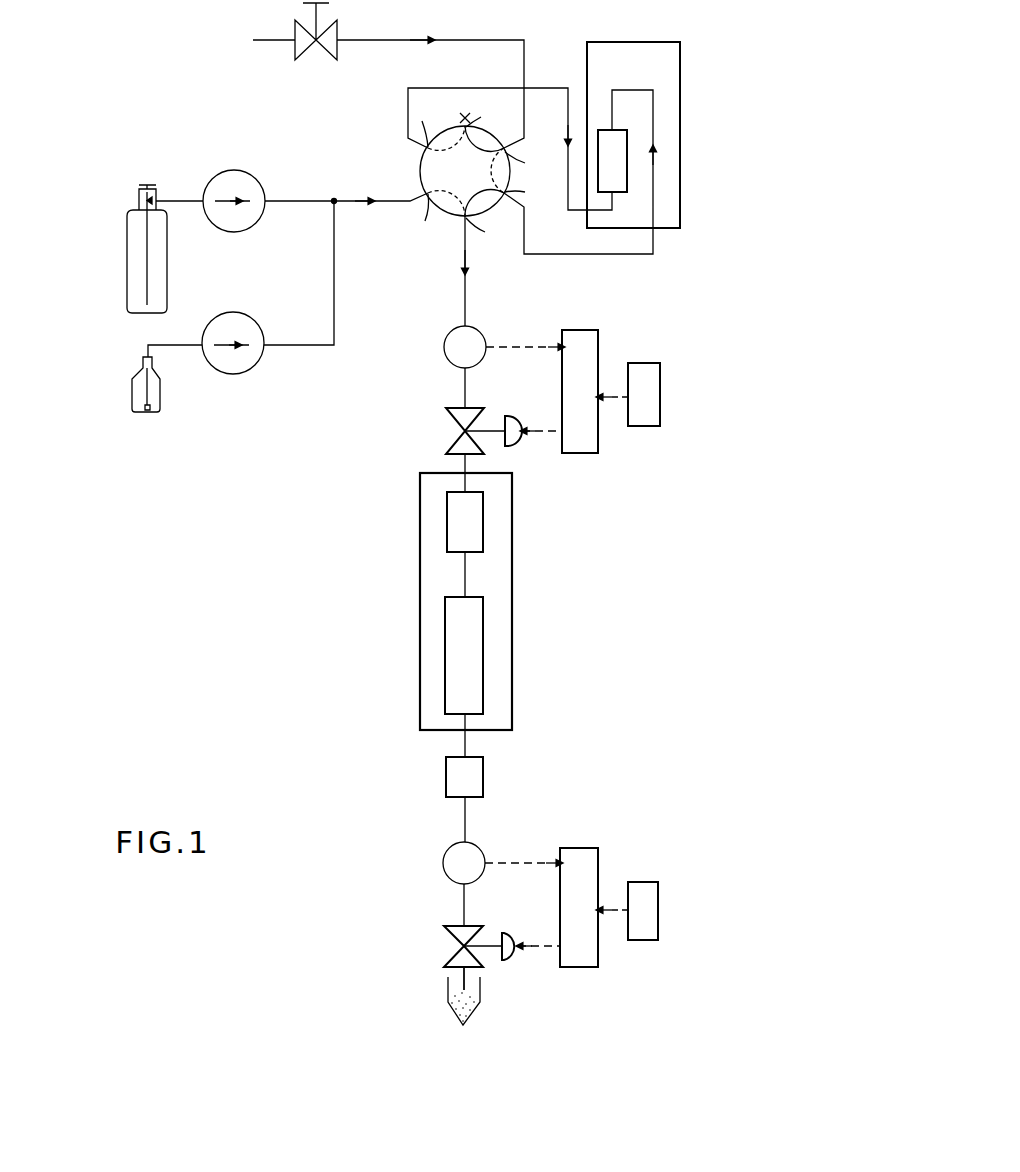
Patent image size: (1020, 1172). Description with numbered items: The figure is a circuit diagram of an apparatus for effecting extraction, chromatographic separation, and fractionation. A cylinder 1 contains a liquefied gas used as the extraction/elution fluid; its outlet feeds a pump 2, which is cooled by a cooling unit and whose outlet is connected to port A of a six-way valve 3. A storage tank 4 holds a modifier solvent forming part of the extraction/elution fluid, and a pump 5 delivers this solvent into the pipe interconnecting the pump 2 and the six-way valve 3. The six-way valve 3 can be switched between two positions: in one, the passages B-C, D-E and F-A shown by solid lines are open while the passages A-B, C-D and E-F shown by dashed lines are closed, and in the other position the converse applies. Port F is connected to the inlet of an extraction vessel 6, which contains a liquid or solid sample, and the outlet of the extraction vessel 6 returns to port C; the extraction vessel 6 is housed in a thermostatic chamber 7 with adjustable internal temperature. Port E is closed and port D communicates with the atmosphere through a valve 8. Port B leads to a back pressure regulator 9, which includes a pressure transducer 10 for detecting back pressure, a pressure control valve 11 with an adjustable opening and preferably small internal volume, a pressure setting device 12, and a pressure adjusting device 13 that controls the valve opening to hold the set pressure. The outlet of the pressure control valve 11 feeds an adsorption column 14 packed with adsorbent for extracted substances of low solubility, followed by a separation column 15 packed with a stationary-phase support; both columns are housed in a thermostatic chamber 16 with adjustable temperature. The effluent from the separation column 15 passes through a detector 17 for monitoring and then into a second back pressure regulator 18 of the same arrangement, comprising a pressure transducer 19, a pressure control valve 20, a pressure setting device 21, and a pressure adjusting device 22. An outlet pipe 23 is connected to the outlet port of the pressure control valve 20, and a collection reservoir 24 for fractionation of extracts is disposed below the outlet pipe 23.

The cylinder 1 is at (126, 262).
The pump 2 is at (258, 181).
The six-way valve 3 is at (420, 165).
The storage tank 4 is at (132, 387).
The pump 5 is at (253, 318).
The extraction vessel 6 is at (627, 180).
The thermostatic chamber 7 is at (565, 148).
The valve 8 is at (337, 24).
The back pressure regulator 9 is at (383, 393).
The pressure transducer 10 is at (444, 347).
The pressure control valve 11 is at (447, 410).
The pressure setting device 12 is at (660, 397).
The pressure adjusting device 13 is at (598, 432).
The adsorption column 14 is at (483, 527).
The separation column 15 is at (483, 622).
The thermostatic chamber 16 is at (455, 601).
The detector 17 is at (446, 785).
The back pressure regulator 18 is at (370, 922).
The pressure transducer 19 is at (442, 862).
The pressure control valve 20 is at (445, 920).
The pressure setting device 21 is at (658, 925).
The pressure adjusting device 22 is at (598, 855).
The outlet pipe 23 is at (446, 970).
The collection reservoir 24 is at (481, 1000).